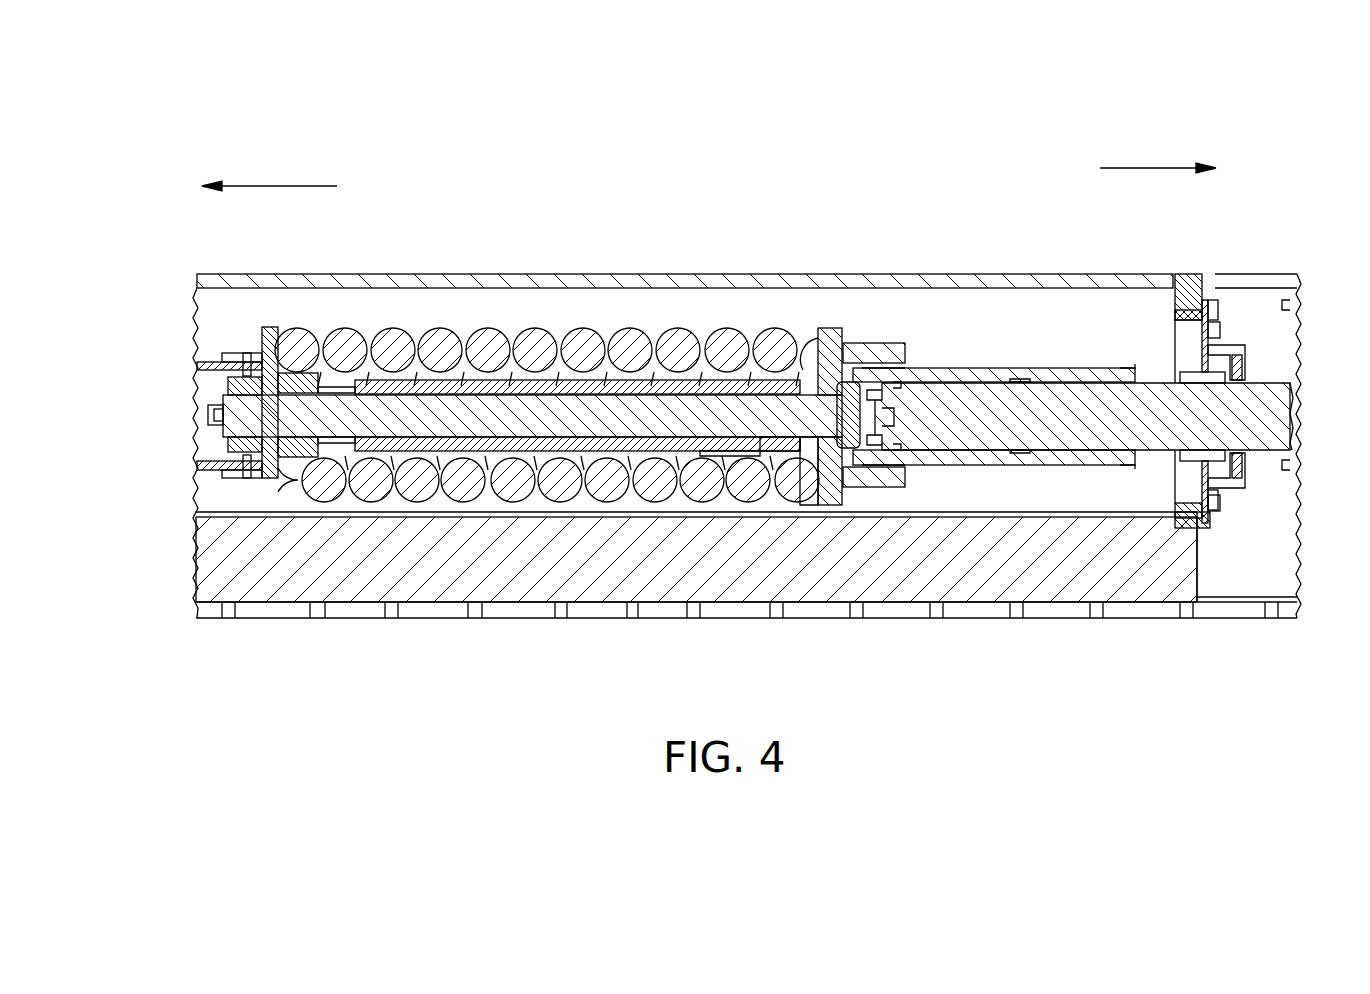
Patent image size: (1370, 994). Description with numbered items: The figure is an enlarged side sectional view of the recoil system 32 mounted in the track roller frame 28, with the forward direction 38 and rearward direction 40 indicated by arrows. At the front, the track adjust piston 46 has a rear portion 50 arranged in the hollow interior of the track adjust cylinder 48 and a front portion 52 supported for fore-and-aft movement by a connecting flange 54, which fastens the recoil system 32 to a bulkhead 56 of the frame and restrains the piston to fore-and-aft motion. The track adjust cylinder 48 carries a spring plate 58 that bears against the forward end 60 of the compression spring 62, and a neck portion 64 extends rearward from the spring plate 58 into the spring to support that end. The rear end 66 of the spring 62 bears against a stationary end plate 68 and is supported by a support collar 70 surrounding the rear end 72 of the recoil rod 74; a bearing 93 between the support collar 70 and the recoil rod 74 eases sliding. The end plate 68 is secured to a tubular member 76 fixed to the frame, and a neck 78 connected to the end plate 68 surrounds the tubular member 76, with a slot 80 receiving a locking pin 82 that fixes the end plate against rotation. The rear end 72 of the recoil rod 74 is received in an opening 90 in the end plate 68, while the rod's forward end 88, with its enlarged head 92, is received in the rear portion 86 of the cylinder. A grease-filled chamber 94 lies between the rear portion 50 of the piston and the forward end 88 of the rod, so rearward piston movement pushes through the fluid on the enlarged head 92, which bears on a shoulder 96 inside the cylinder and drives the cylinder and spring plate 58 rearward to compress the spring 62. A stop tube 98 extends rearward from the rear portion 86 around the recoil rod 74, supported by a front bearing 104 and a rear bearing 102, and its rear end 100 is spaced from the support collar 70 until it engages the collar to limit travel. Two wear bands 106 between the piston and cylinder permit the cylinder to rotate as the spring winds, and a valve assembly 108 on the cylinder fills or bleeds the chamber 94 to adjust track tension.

The track roller frame 28 is at (392, 560).
The recoil system 32 is at (547, 459).
The forward direction 38 is at (1162, 166).
The rearward direction 40 is at (292, 186).
The track adjust piston 46 is at (1085, 420).
The track adjust cylinder 48 is at (1000, 368).
The rear portion 50 is at (866, 452).
The front portion 52 is at (1263, 397).
The connecting flange 54 is at (1205, 478).
The bulkhead 56 is at (1194, 530).
The spring plate 58 is at (828, 330).
The forward end 60 is at (850, 392).
The spring 62 is at (515, 490).
The neck portion 64 is at (752, 472).
The rear end 66 is at (284, 490).
The end plate 68 is at (264, 327).
The support collar 70 is at (307, 373).
The rear end 72 is at (215, 464).
The recoil rod 74 is at (560, 410).
The tubular member 76 is at (212, 362).
The neck 78 is at (242, 475).
The slot 80 is at (228, 353).
The locking pin 82 is at (246, 376).
The rear portion 86 is at (797, 482).
The forward end 88 is at (683, 370).
The opening 90 is at (268, 397).
The enlarged head 92 is at (860, 345).
The bearing 93 is at (318, 495).
The chamber 94 is at (920, 412).
The shoulder 96 is at (860, 487).
The stop tube 98 is at (452, 380).
The rear end 100 is at (365, 455).
The rear bearing 102 is at (392, 380).
The front bearing 104 is at (702, 490).
The wear bands 106 is at (1030, 383).
The valve assembly 108 is at (893, 372).